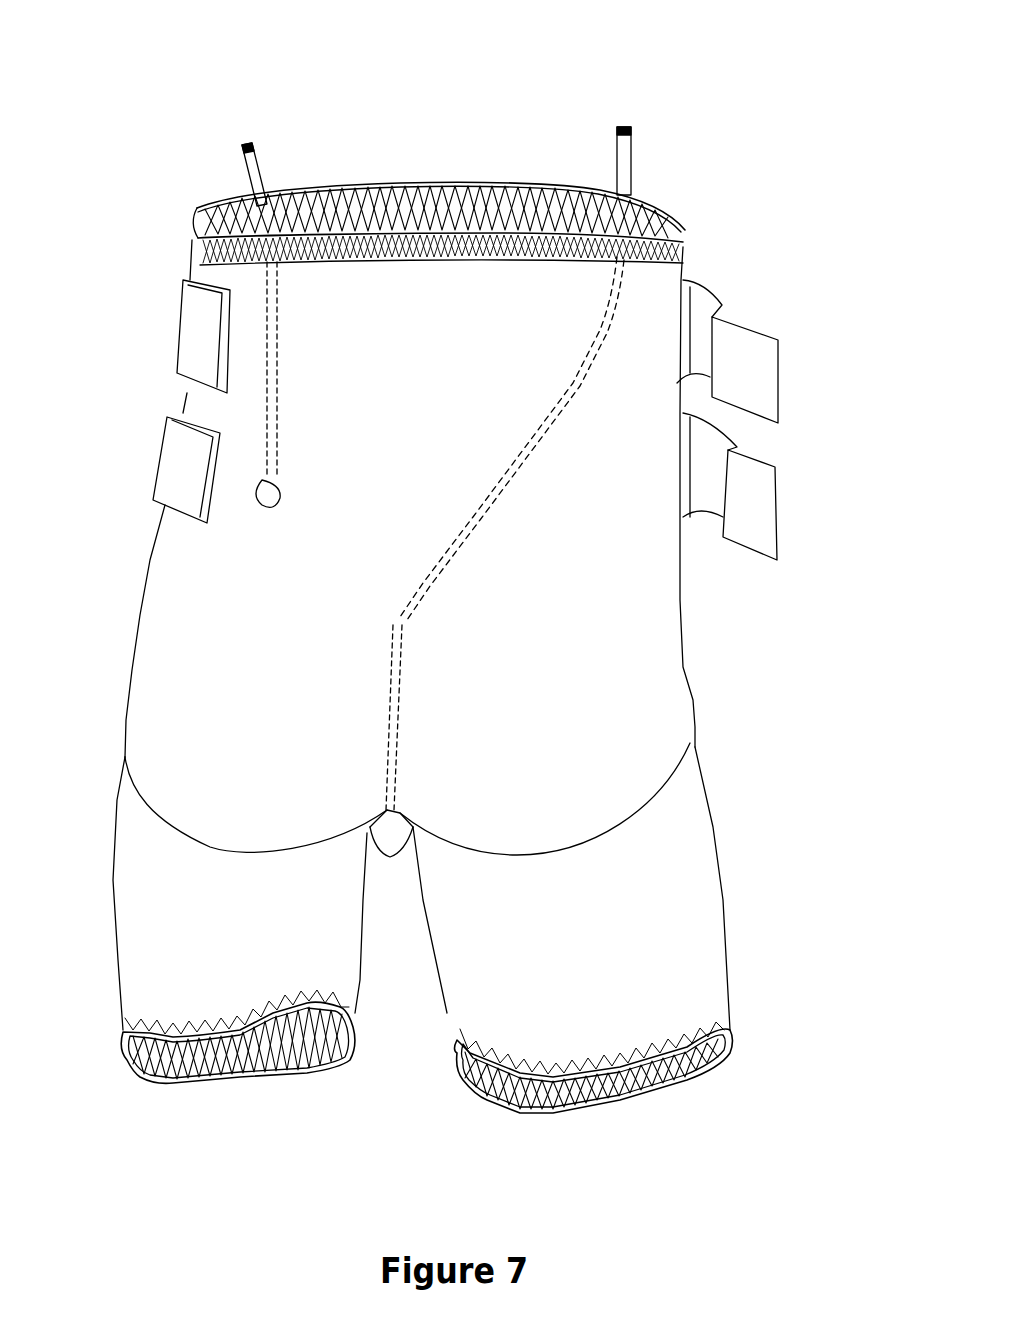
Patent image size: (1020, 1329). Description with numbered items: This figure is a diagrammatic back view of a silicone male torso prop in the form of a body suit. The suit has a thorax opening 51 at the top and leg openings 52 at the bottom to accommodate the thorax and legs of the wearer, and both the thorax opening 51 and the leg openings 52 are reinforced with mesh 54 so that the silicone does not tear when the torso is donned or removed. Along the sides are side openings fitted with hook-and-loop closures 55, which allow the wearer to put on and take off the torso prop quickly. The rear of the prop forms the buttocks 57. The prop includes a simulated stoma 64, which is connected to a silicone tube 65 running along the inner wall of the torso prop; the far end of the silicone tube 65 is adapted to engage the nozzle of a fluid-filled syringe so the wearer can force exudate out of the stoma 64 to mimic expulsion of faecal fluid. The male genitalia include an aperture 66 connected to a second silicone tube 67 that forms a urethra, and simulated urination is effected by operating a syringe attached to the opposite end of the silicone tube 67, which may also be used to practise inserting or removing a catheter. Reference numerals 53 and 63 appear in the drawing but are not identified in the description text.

The thorax opening 51 is at (486, 185).
The leg openings 52 is at (470, 1080).
The leg cuff bands 53 is at (128, 1047).
The mesh 54 is at (684, 247).
The hook-and-loop closures 55 is at (150, 455).
The buttocks 57 is at (600, 737).
The drawstring knot 63 is at (284, 501).
The simulated stoma 64 is at (278, 520).
The silicone tube 65 is at (247, 141).
The aperture 66 is at (392, 860).
The silicone tube 67 is at (632, 124).